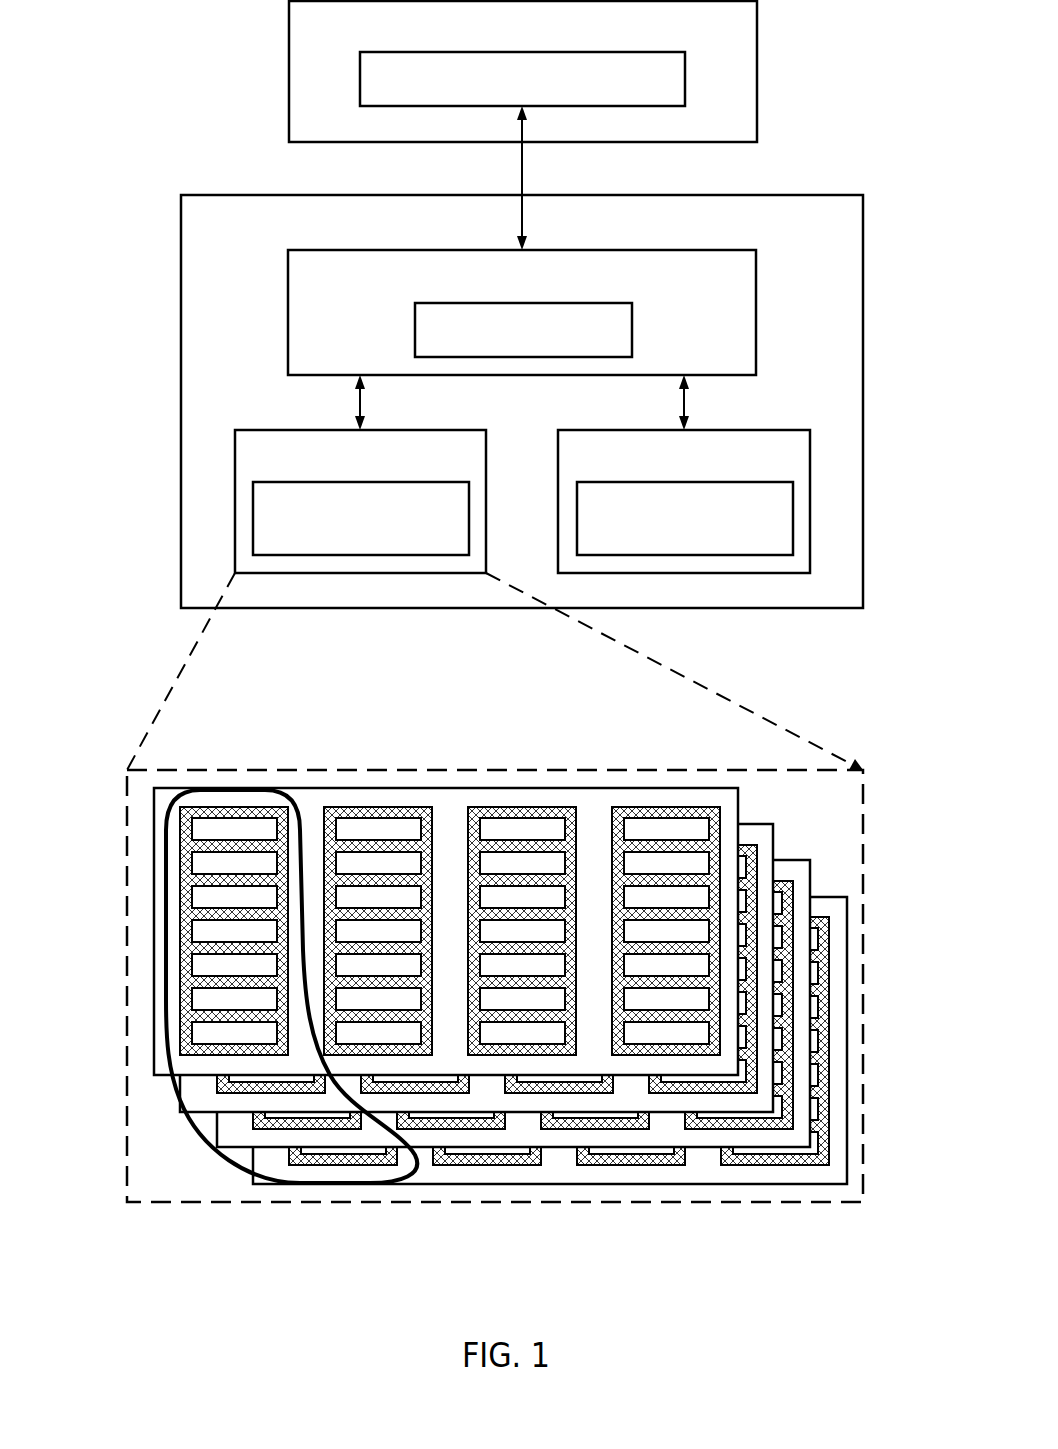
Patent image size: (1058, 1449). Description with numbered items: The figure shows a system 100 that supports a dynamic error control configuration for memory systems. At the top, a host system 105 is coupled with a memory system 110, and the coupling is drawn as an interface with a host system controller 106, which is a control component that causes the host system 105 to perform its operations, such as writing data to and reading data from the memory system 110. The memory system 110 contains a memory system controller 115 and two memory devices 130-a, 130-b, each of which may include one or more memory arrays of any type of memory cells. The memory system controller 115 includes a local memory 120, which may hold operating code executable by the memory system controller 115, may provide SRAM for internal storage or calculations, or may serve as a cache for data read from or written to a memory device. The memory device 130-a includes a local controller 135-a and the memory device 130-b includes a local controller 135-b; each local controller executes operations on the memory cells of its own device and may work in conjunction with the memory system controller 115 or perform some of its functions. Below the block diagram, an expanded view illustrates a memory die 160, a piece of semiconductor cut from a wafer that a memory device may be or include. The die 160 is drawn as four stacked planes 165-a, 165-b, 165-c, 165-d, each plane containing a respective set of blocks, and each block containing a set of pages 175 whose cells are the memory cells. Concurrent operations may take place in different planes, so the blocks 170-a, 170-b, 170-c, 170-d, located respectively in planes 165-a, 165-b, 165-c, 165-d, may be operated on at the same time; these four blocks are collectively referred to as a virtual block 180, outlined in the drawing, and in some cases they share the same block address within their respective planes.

The system 100 is at (500, 677).
The host system 105 is at (523, 71).
The host system controller 106 is at (522, 79).
The memory system 110 is at (522, 401).
The memory system controller 115 is at (522, 312).
The local memory 120 is at (523, 330).
The memory device 130-a is at (360, 501).
The memory device 130-b is at (684, 501).
The local controller 135-a is at (361, 518).
The local controller 135-b is at (685, 518).
The memory die 160 is at (127, 808).
The plane 165-a is at (505, 916).
The plane 165-b is at (504, 967).
The plane 165-c is at (504, 1002).
The plane 165-d is at (540, 1056).
The block 170-a is at (170, 931).
The block 170-b is at (217, 1082).
The block 170-c is at (253, 1120).
The block 170-d is at (290, 1155).
The page 175 is at (182, 968).
The virtual block 180 is at (300, 815).